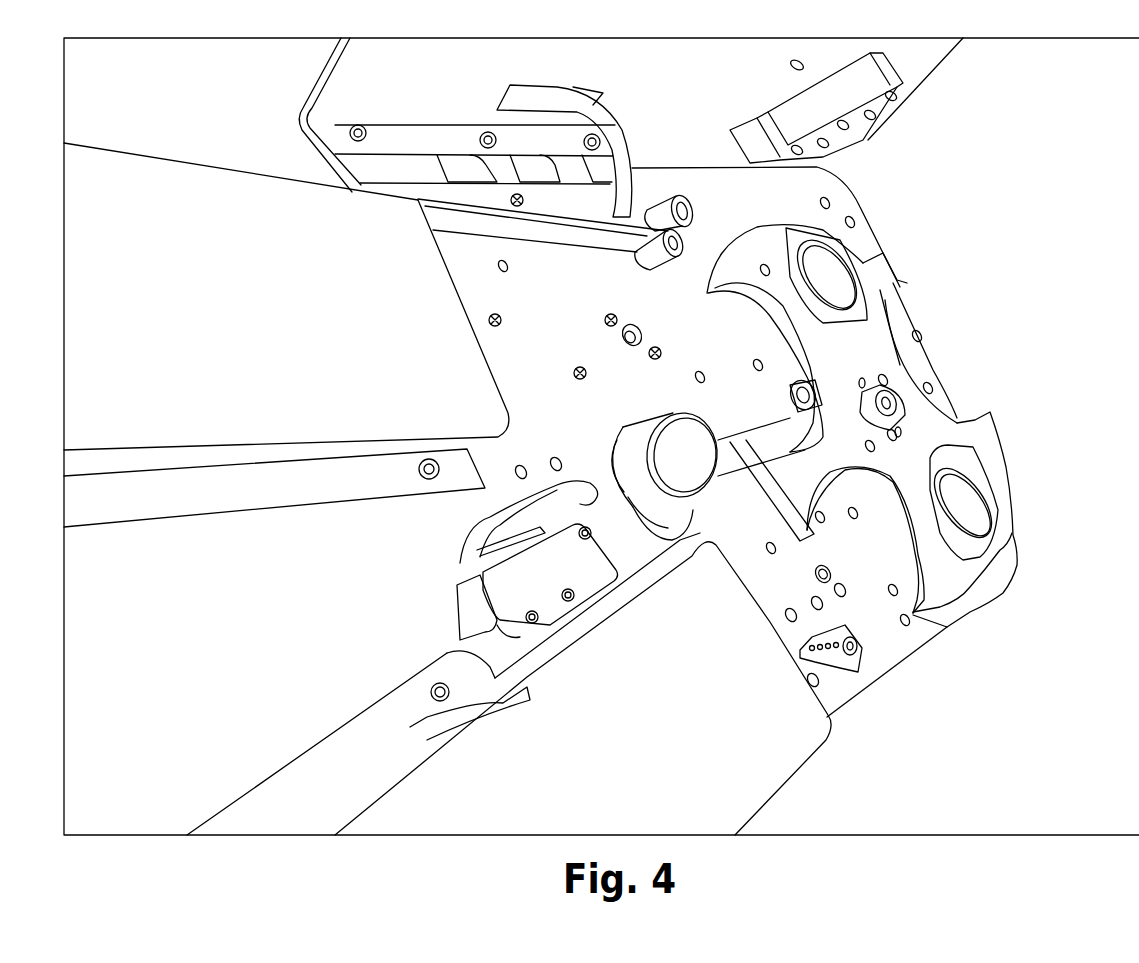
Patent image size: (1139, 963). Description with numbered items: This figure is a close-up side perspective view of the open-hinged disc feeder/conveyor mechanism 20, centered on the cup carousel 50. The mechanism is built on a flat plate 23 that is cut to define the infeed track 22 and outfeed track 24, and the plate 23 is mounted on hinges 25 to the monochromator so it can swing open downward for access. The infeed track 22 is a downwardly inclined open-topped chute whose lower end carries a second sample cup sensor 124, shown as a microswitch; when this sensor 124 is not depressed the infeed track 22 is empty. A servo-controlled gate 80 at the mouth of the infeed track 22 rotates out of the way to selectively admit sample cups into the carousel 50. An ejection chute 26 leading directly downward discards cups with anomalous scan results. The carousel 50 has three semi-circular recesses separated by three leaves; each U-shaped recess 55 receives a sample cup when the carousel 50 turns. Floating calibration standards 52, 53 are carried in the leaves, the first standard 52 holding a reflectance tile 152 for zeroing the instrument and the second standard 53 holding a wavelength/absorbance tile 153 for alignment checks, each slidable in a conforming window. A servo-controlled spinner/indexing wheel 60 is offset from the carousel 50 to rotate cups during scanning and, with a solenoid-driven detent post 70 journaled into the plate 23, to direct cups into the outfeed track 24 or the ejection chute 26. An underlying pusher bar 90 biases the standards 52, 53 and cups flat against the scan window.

The disc feeder/conveyor mechanism 20 is at (1016, 218).
The infeed track 22 is at (631, 789).
The flat plate 23 is at (221, 654).
The outfeed track 24 is at (204, 326).
The hinges 25 is at (424, 156).
The ejection chute 26 is at (753, 215).
The cup carousel 50 is at (926, 400).
The floating calibration standard 52 is at (848, 248).
The floating calibration standard 53 is at (990, 491).
The U-shaped recess 55 is at (857, 512).
The spinner/indexing wheel 60 is at (696, 472).
The detent post 70 is at (628, 322).
The servo-controlled gate 80 is at (860, 672).
The pusher bar 90 is at (797, 450).
The second sample cup sensor 124 is at (612, 588).
The reflectance standard tile 152 is at (841, 289).
The wavelength/absorbance standard tile 153 is at (978, 518).